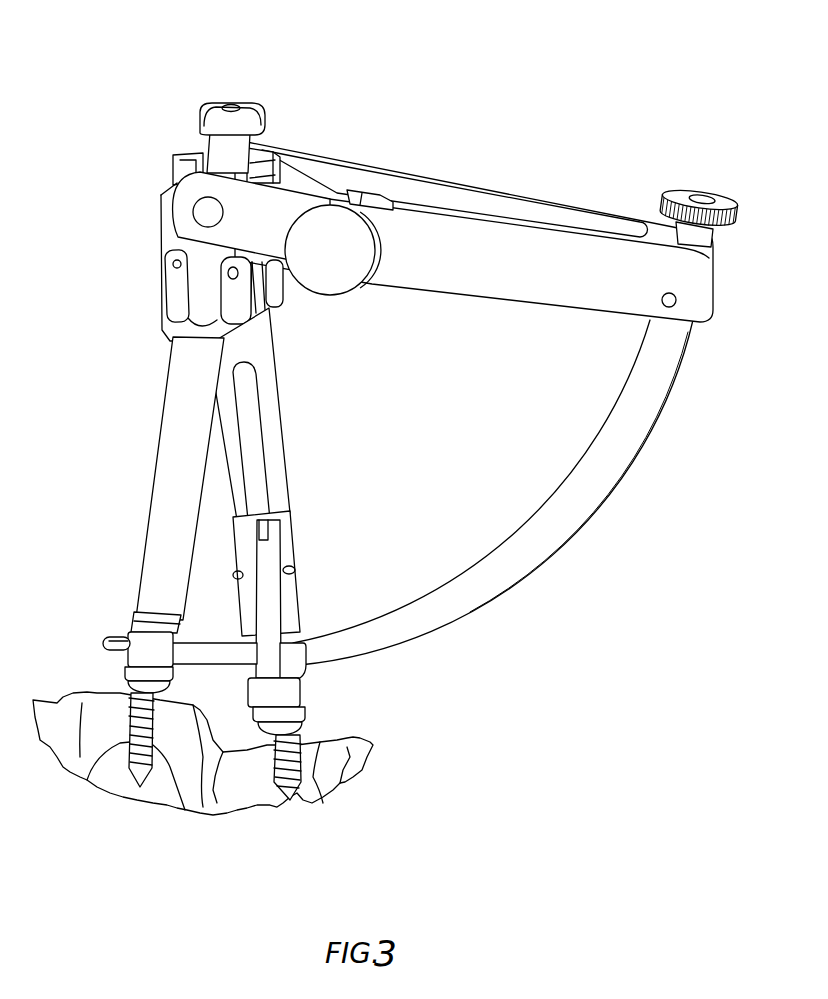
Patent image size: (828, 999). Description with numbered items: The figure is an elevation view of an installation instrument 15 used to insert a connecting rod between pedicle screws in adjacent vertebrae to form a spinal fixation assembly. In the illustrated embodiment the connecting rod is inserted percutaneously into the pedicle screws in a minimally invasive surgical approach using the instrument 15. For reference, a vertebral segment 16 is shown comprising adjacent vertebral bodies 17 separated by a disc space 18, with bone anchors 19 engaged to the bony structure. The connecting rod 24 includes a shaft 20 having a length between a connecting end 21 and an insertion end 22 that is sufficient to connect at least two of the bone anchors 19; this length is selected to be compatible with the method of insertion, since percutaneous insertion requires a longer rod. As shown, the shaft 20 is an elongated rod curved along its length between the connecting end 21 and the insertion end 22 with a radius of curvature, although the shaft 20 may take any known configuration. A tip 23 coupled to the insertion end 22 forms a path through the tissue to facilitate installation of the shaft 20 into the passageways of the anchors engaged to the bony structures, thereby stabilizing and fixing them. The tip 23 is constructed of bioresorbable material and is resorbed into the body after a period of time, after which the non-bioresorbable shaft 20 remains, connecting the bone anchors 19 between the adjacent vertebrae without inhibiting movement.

The instrument 15 is at (425, 112).
The vertebral segment 16 is at (447, 771).
The vertebral bodies 17 is at (150, 792).
The disc space 18 is at (202, 805).
The bone anchors 19 is at (90, 775).
The shaft 20 is at (205, 660).
The connecting end 21 is at (293, 645).
The insertion end 22 is at (127, 632).
The tip 23 is at (108, 637).
The connecting rod 24 is at (128, 657).